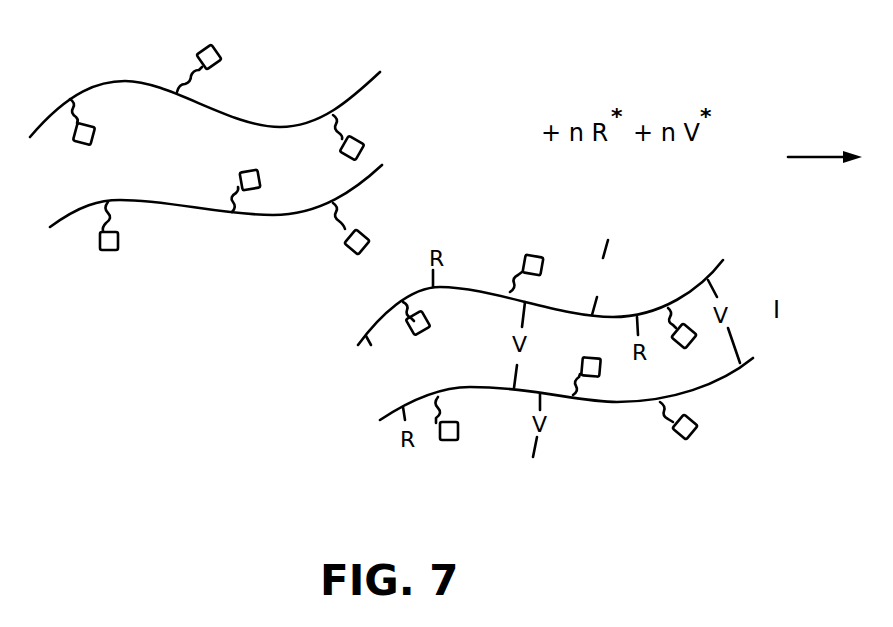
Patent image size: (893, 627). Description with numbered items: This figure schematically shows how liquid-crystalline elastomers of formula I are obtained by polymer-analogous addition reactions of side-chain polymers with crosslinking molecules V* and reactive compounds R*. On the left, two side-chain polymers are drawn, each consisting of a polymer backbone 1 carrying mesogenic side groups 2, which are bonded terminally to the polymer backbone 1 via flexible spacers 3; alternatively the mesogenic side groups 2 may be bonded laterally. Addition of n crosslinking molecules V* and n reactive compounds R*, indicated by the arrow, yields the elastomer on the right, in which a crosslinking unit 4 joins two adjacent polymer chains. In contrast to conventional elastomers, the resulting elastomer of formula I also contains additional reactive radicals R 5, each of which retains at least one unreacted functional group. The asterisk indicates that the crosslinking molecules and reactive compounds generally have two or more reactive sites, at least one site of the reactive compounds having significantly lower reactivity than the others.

The polymer backbone 1 is at (373, 82).
The mesogenic side groups 2 is at (218, 53).
The flexible spacers 3 is at (70, 117).
The crosslinking unit 4 is at (617, 267).
The reactive radicals R 5 is at (366, 371).